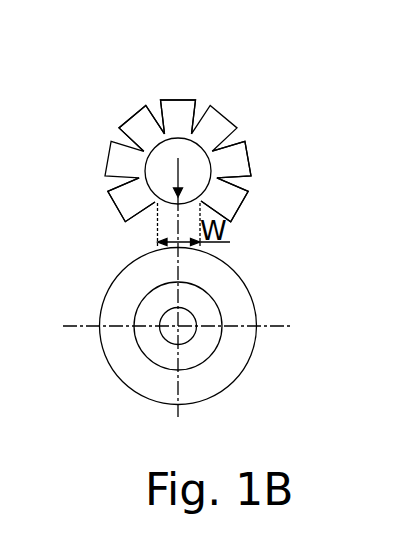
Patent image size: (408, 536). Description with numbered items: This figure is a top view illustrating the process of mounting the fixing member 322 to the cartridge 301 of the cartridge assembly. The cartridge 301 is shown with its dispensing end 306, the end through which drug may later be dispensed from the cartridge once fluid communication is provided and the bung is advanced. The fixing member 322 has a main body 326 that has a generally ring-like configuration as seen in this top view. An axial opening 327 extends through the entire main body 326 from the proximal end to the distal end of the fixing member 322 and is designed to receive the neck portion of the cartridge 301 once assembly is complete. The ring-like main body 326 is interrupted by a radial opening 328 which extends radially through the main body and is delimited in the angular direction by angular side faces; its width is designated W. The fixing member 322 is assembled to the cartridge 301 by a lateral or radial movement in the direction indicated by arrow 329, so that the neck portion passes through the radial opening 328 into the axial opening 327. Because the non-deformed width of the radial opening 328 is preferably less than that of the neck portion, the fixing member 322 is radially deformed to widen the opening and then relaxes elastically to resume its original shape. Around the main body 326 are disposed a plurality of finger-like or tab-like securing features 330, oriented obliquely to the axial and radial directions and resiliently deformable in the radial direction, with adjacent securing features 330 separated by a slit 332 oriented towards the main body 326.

The cartridge 301 is at (208, 312).
The dispensing end 306 is at (185, 330).
The fixing member 322 is at (224, 124).
The main body 326 is at (212, 164).
The axial opening 327 is at (188, 157).
The radial opening 328 is at (202, 200).
The arrow 329 is at (202, 200).
The securing features 330 is at (138, 112).
The slit 332 is at (158, 124).